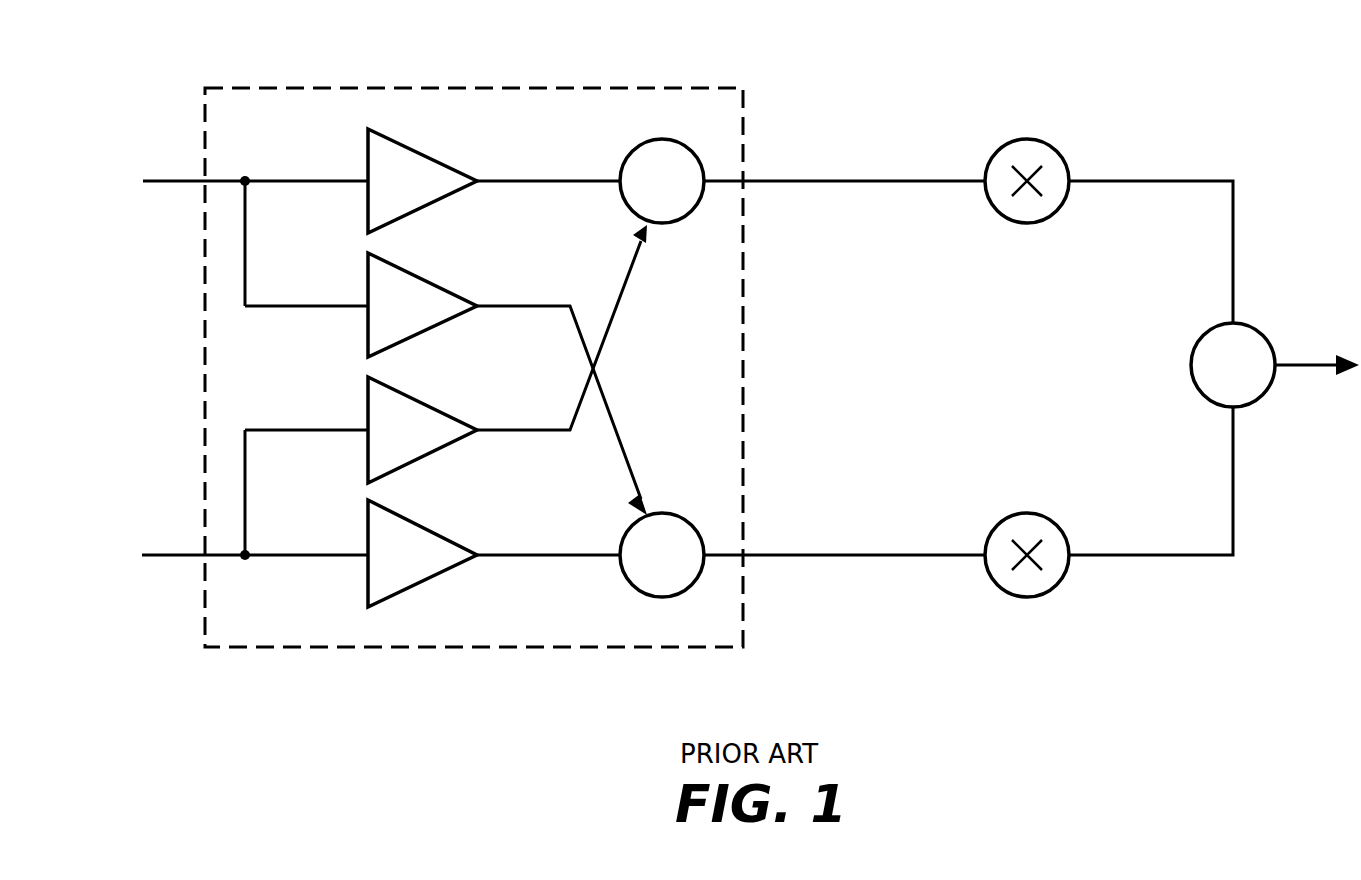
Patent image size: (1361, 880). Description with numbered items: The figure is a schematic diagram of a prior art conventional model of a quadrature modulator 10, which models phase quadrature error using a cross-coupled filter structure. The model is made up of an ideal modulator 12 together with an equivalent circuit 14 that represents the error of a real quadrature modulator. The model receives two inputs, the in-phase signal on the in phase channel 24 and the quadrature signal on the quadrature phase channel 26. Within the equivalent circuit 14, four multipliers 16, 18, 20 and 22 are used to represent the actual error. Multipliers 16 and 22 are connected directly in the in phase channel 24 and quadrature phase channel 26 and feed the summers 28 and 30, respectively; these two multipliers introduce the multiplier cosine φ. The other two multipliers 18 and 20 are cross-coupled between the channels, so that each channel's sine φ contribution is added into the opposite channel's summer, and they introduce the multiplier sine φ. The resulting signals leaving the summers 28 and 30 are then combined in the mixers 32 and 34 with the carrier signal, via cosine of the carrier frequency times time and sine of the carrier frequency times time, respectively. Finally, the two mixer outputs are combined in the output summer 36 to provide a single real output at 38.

The quadrature modulator 10 is at (1311, 19).
The ideal modulator 12 is at (1224, 153).
The equivalent circuit 14 is at (307, 88).
The multiplier 16 is at (417, 150).
The multiplier 18 is at (417, 275).
The multiplier 20 is at (418, 400).
The multiplier 22 is at (418, 522).
The in phase channel 24 is at (162, 180).
The quadrature phase channel 26 is at (163, 554).
The summer 28 is at (676, 222).
The summer 30 is at (633, 586).
The mixer 32 is at (1015, 222).
The mixer 34 is at (1040, 513).
The output summer 36 is at (1213, 330).
The output 38 is at (1305, 362).